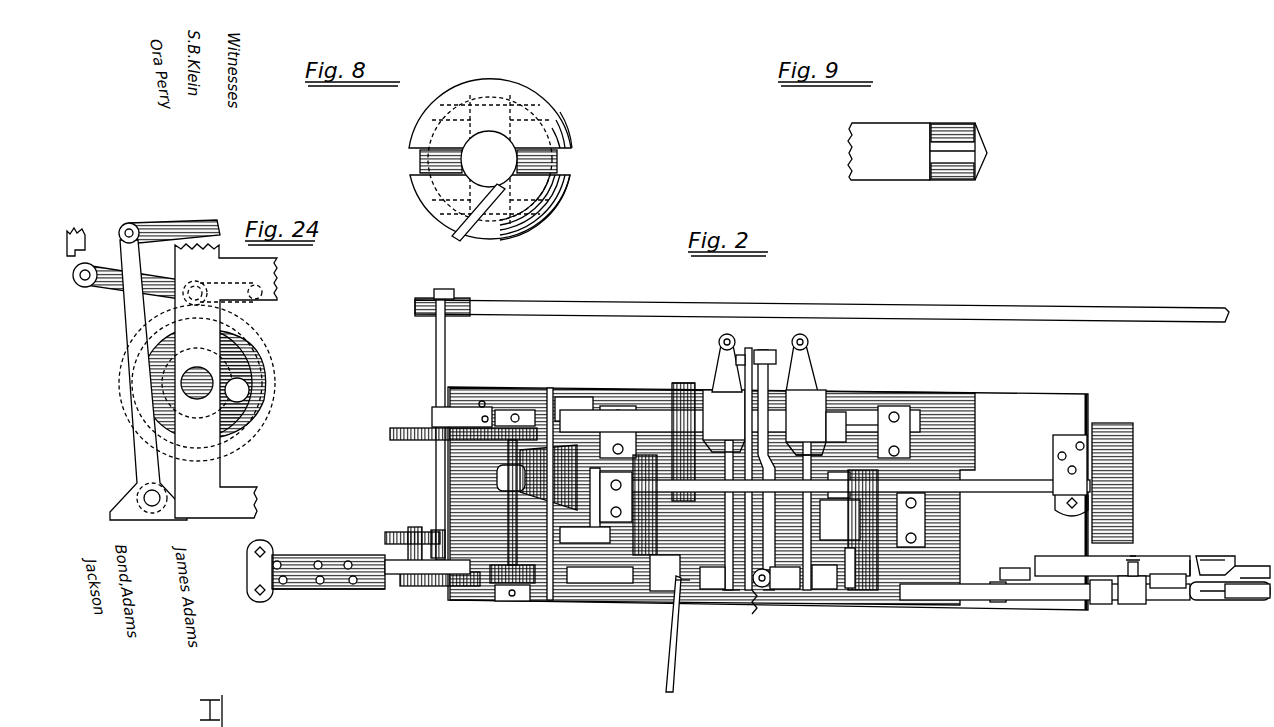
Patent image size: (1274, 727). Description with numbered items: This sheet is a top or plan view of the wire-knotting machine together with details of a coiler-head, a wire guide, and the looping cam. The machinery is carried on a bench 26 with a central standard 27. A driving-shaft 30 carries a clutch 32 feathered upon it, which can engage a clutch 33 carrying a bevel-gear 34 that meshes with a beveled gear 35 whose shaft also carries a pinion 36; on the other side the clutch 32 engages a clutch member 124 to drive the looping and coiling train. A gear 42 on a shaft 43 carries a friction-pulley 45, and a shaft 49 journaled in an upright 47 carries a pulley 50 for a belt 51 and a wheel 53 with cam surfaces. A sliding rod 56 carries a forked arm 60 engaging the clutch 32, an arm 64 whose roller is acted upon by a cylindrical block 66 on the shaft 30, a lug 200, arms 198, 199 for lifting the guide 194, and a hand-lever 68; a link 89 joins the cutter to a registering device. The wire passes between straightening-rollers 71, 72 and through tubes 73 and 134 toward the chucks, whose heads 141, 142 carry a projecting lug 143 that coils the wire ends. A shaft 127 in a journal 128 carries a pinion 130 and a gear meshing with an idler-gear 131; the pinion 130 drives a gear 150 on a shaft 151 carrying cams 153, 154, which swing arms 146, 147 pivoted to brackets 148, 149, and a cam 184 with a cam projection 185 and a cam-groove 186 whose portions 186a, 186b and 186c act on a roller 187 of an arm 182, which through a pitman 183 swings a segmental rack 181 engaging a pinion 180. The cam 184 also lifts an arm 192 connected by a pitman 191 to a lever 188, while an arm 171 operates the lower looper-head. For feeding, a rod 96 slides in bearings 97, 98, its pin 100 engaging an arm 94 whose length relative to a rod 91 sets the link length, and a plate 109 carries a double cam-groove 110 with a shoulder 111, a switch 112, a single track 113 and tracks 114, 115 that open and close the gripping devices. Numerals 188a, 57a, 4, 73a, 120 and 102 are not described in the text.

In FIG. 8, the head 141 is at (490, 159).
In FIG. 8, the head 142 is at (488, 175).
In FIG. 8, the projecting lug 143 is at (464, 228).
In FIG. 9, the guide 194 is at (890, 170).
In FIG. 24, the upright or standard 27 is at (226, 381).
In FIG. 24, the arm 182 is at (125, 300).
In FIG. 24, the pitman 183 is at (174, 224).
In FIG. 2, the pitman 183 is at (740, 590).
In FIG. 24, the pitman 191 is at (100, 215).
In FIG. 24, the arm 192 is at (136, 279).
In FIG. 24, the cam projection 185 is at (181, 357).
In FIG. 24, the cam-groove 186 is at (252, 335).
In FIG. 24, the cam portion of the cam-groove 186a is at (265, 360).
In FIG. 24, the portion of the cam-groove 186b is at (130, 425).
In FIG. 24, the portion of the cam-groove 186c is at (238, 440).
In FIG. 24, the roller 187 is at (125, 350).
In FIG. 24, the roller arm 188a is at (130, 390).
In FIG. 24, the cam 184 is at (262, 398).
In FIG. 2, the cam 184 is at (805, 335).
In FIG. 2, the shaft 43 is at (500, 506).
In FIG. 2, the belt 51 is at (622, 300).
In FIG. 2, the pulley 50 is at (423, 286).
In FIG. 2, the shaft 49 is at (436, 350).
In FIG. 2, the upright 47 is at (432, 410).
In FIG. 2, the rack 57a is at (448, 418).
In FIG. 2, the gear 42 is at (495, 410).
In FIG. 2, the beveled gear 35 is at (525, 412).
In FIG. 2, the pinion 36 is at (540, 450).
In FIG. 2, the bevel-gear 34 is at (555, 395).
In FIG. 2, the clutch 33 is at (575, 396).
In FIG. 2, the clutch 32 is at (618, 405).
In FIG. 2, the bench or table 26 is at (767, 432).
In FIG. 2, the clutch member 124 is at (660, 440).
In FIG. 2, the gear 150 is at (684, 384).
In FIG. 2, the arm 146 is at (714, 515).
In FIG. 2, the lug 200 is at (750, 515).
In FIG. 2, the cam 153 is at (715, 388).
In FIG. 2, the bracket 148 is at (732, 338).
In FIG. 2, the bracket 149 is at (822, 365).
In FIG. 2, the cam 154 is at (815, 420).
In FIG. 2, the shaft 151 is at (860, 420).
In FIG. 2, the arm 171 is at (742, 454).
In FIG. 2, the lever 188 is at (771, 453).
In FIG. 2, the arm 147 is at (812, 455).
In FIG. 2, the cylindrical block 66 is at (841, 476).
In FIG. 2, the arm 64 is at (842, 511).
In FIG. 2, the driving-shaft 30 is at (992, 484).
In FIG. 2, the tube 134 is at (870, 585).
In FIG. 2, the shaft 127 is at (825, 585).
In FIG. 2, the arm 199 is at (860, 590).
In FIG. 2, the idler-gear 131 is at (1108, 483).
In FIG. 2, the forked arm 60 is at (592, 520).
In FIG. 2, the sliding rod 56 is at (570, 545).
In FIG. 2, the journal 128 is at (635, 530).
In FIG. 2, the pinion 130 is at (645, 560).
In FIG. 2, the tube 73 is at (618, 585).
In FIG. 2, the link 89 is at (520, 600).
In FIG. 2, the friction-pulley 45 is at (495, 586).
In FIG. 2, the rod 91 is at (414, 527).
In FIG. 2, the wheel 53 is at (392, 535).
In FIG. 2, the straightening-rollers 72 is at (440, 580).
In FIG. 2, the bar 4 is at (245, 575).
In FIG. 2, the straightening-rollers 71 is at (318, 562).
In FIG. 2, the bar 73a is at (340, 590).
In FIG. 2, the hand-lever 68 is at (668, 670).
In FIG. 2, the arm 198 is at (680, 590).
In FIG. 2, the swinging segmental rack 181 is at (760, 590).
In FIG. 2, the pinion 180 is at (770, 590).
In FIG. 2, the collar 120 is at (1012, 570).
In FIG. 2, the bearing 98 is at (996, 602).
In FIG. 2, the rod 96 is at (1062, 600).
In FIG. 2, the plate 109 is at (1165, 560).
In FIG. 2, the bearing 97 is at (1098, 605).
In FIG. 2, the valve 102 is at (1130, 604).
In FIG. 2, the track 115 is at (1168, 588).
In FIG. 2, the track 114 is at (1190, 556).
In FIG. 2, the pin 100 is at (1200, 602).
In FIG. 2, the arm 94 is at (1230, 600).
In FIG. 2, the single track 113 is at (1262, 600).
In FIG. 2, the double cam-groove 110 is at (1225, 560).
In FIG. 2, the shoulder 111 is at (1208, 558).
In FIG. 2, the switch 112 is at (1240, 565).